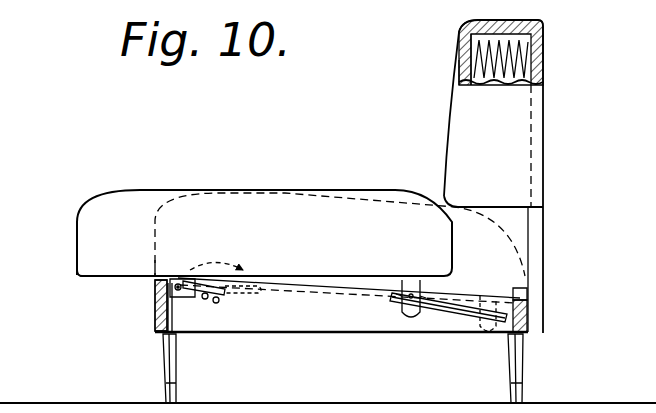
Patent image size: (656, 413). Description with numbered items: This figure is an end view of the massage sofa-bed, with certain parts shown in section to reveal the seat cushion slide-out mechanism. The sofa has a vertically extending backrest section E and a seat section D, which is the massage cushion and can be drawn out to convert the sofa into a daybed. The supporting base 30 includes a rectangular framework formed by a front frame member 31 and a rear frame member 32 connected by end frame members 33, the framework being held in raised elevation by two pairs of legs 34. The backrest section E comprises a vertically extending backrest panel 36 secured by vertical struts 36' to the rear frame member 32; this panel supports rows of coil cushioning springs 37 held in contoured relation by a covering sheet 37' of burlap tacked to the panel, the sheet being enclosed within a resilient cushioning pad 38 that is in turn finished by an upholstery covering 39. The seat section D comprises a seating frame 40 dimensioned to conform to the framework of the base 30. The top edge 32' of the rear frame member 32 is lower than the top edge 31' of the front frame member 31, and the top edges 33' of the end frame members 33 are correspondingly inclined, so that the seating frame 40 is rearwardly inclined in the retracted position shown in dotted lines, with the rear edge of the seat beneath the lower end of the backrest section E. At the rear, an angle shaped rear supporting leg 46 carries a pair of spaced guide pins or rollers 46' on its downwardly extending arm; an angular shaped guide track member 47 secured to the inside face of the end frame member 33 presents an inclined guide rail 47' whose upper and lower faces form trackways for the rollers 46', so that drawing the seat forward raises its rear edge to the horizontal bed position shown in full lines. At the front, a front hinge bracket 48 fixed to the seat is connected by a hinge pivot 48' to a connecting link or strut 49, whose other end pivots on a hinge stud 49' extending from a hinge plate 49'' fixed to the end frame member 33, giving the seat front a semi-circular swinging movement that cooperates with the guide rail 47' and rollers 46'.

The backrest section E is at (442, 112).
The seat section D is at (153, 187).
The supporting base 30 is at (158, 340).
The front frame member 31 is at (132, 312).
The top edge of front frame member 31' is at (130, 262).
The rear frame member 32 is at (551, 331).
The top edge of rear frame member 32' is at (553, 289).
The end frame members 33 is at (341, 352).
The top edges of end frame members 33' is at (349, 275).
The legs 34 is at (178, 383).
The backrest panel 36 is at (530, 78).
The vertical struts 36' is at (564, 158).
The coil cushioning springs 37 is at (541, 55).
The covering sheet 37' is at (428, 72).
The resilient cushioning pad 38 is at (462, 53).
The upholstery covering 39 is at (463, 32).
The seating frame 40 is at (88, 278).
The rear supporting leg 46 is at (441, 308).
The guide pins or rollers 46' is at (402, 271).
The guide track member 47 is at (448, 336).
The inclined guide rail 47' is at (448, 334).
The front hinge bracket 48 is at (179, 265).
The hinge pivot 48' is at (143, 290).
The connecting link or strut 49 is at (201, 307).
The hinge stud 49' is at (251, 310).
The hinge plate 49'' is at (231, 327).